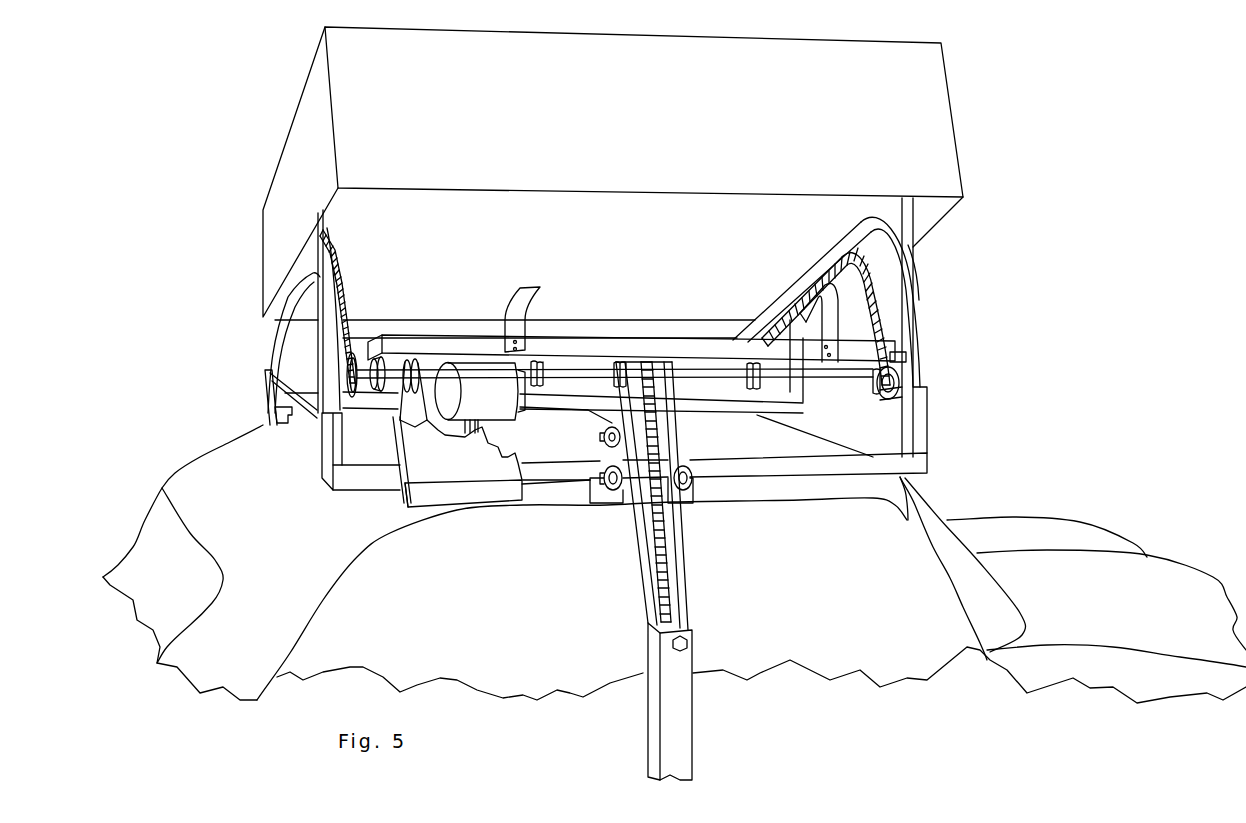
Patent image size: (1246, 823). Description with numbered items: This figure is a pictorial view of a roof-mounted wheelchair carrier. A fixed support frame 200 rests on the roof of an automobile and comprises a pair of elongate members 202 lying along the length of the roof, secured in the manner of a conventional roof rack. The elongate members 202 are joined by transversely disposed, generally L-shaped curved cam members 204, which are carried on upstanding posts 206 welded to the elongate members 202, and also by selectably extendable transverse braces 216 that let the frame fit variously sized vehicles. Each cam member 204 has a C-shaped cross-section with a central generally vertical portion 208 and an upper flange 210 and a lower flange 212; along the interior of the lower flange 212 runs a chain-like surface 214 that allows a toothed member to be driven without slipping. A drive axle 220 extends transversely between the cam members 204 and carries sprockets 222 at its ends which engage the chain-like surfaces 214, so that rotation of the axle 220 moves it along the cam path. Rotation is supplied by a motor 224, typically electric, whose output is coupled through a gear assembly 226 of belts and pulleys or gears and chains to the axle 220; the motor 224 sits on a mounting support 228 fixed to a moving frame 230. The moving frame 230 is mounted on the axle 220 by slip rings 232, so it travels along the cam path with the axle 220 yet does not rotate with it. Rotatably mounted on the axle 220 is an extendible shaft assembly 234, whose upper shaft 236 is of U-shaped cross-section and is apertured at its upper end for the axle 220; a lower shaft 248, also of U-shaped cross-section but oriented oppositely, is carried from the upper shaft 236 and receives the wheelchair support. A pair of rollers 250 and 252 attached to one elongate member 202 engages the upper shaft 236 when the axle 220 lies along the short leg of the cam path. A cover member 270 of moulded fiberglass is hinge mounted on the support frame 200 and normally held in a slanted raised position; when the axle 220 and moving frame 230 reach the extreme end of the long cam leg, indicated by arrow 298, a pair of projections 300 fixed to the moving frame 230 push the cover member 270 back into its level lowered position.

The fixed support frame 200 is at (940, 468).
The elongate members 202 is at (272, 421).
The curved cam members 204 is at (336, 270).
The upstanding posts 206 is at (267, 393).
The central generally vertically disposed portion 208 is at (853, 240).
The upper flange 210 is at (878, 226).
The lower flange 212 is at (838, 264).
The chain-like surface 214 is at (885, 303).
The transverse braces 216 is at (310, 420).
The drive axle 220 is at (683, 380).
The sprockets 222 is at (905, 361).
The motor 224 is at (459, 400).
The gear assembly 226 is at (433, 445).
The mounting support 228 is at (440, 495).
The moving frame 230 is at (598, 343).
The slip rings 232 is at (372, 397).
The extendible shaft assembly 234 is at (690, 565).
The upper shaft 236 is at (641, 557).
The lower shaft 248 is at (684, 733).
The roller 250 is at (623, 490).
The roller 252 is at (611, 447).
The cover member 270 is at (619, 130).
The arrow 298 is at (742, 324).
The projections 300 is at (513, 296).